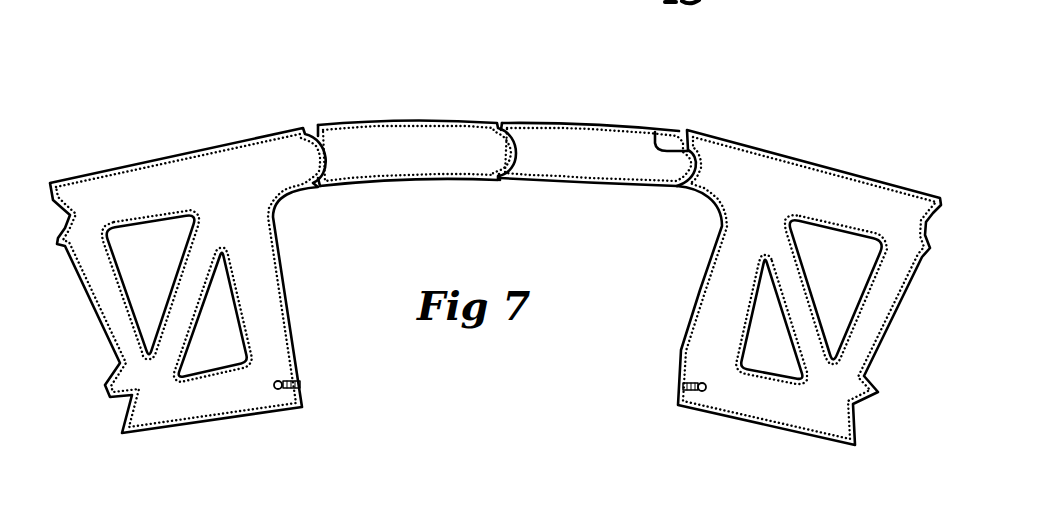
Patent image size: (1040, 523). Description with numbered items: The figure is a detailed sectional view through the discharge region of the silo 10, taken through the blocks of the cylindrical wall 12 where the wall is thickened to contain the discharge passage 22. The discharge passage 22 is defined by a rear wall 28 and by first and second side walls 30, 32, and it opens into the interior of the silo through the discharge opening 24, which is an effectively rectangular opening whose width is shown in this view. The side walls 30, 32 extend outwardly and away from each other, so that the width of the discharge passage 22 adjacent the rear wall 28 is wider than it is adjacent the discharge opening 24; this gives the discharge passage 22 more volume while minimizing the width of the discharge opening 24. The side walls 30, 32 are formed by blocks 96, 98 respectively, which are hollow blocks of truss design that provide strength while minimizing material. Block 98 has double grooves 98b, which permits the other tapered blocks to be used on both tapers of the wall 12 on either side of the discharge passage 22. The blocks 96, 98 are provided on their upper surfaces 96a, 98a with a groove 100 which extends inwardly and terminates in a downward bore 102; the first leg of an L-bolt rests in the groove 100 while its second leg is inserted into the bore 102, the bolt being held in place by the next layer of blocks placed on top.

The silo 10 is at (360, 67).
The cylindrical wall 12 is at (566, 102).
The discharge passage 22 is at (493, 371).
The discharge opening 24 is at (500, 427).
The rear wall 28 is at (511, 183).
The first side wall 30 is at (279, 249).
The second side wall 32 is at (713, 253).
The block 96 is at (330, 343).
The upper surface 96a is at (217, 403).
The block 98 is at (657, 345).
The upper surface 98a is at (756, 405).
The double grooves 98b is at (657, 133).
The groove 100 is at (300, 385).
The bore 102 is at (281, 380).